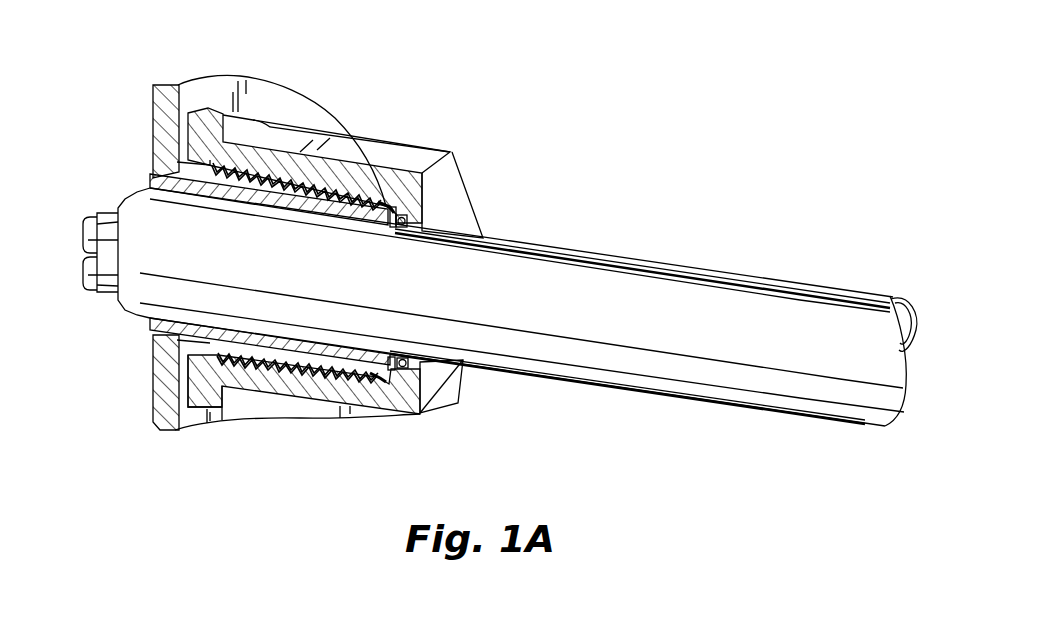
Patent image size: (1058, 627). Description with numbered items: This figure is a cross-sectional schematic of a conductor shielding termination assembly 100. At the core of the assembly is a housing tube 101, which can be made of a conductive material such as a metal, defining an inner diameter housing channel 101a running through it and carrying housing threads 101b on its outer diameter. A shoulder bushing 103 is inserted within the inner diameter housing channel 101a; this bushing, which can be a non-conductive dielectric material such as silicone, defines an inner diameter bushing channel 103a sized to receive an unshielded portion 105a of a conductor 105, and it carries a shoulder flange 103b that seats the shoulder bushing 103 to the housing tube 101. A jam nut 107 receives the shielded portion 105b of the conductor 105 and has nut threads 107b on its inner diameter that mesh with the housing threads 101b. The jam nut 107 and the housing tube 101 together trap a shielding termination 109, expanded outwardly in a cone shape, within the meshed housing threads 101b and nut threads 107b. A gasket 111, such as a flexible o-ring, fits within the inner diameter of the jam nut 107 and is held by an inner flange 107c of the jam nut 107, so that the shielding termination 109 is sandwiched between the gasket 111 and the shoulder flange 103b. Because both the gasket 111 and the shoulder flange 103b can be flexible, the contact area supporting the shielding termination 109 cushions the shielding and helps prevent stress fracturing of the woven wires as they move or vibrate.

The conductor shielding termination assembly 100 is at (362, 50).
The housing tube 101 is at (153, 112).
The inner diameter housing channel 101a is at (360, 357).
The housing threads 101b is at (226, 356).
The shoulder bushing 103 is at (150, 181).
The inner diameter bushing channel 103a is at (170, 320).
The shoulder flange 103b is at (386, 205).
The conductor 105 is at (651, 253).
The unshielded portion 105a is at (160, 218).
The shielded portion 105b is at (512, 246).
The jam nut 107 is at (404, 400).
The nut threads 107b is at (228, 360).
The inner flange 107c is at (420, 362).
The shielding termination 109 is at (362, 377).
The gasket 111 is at (398, 214).